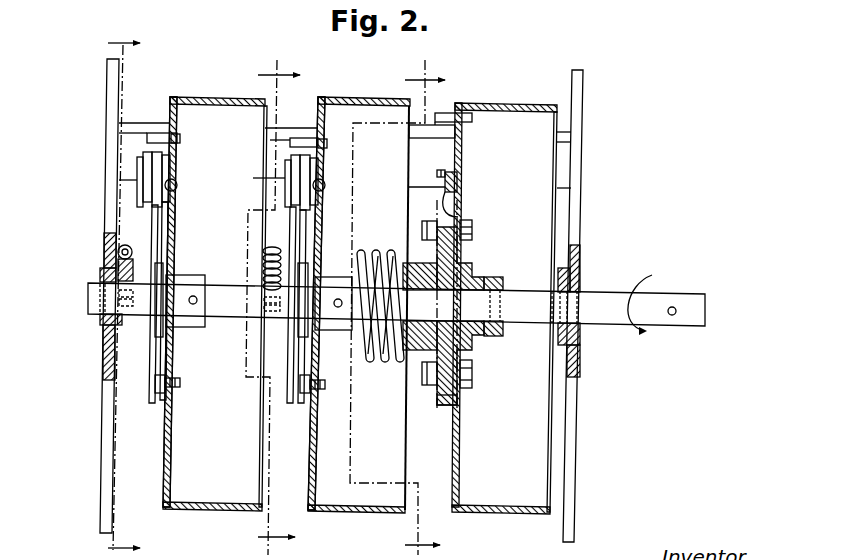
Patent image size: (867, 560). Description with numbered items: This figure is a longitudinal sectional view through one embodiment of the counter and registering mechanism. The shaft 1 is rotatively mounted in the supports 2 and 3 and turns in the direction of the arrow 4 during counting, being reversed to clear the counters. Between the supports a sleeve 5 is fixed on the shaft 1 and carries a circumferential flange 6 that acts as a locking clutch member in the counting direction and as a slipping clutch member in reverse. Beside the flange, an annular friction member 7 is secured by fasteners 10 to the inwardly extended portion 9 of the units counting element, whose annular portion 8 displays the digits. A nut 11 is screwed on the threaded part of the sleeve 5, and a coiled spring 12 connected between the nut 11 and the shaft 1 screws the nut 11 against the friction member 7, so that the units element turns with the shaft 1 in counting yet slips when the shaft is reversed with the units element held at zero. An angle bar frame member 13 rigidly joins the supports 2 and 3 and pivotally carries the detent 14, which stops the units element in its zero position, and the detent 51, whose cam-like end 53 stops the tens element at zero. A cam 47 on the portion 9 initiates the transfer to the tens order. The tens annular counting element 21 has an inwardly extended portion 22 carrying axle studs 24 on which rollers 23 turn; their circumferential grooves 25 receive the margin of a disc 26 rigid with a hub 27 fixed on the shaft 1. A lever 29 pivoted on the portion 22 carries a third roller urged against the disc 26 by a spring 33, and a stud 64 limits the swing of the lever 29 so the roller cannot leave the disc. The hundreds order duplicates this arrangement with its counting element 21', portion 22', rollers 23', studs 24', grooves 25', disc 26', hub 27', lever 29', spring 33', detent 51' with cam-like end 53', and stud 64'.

The shaft 1 is at (694, 326).
The support 2 is at (577, 185).
The support 3 is at (97, 186).
The arrow 4 is at (444, 307).
The sleeve 5 is at (507, 274).
The circumferential flange 6 is at (470, 266).
The annular friction member 7 is at (452, 398).
The annular portion of units counting element 8 is at (518, 104).
The inwardly extended portion 9 is at (462, 205).
The fasteners 10 is at (473, 229).
The nut 11 is at (405, 352).
The coiled spring 12 is at (390, 258).
The angle bar frame member 13 is at (130, 147).
The detent 14 is at (450, 113).
The tens annular counting element 21 is at (359, 291).
The hundreds annular counting element 21' is at (215, 290).
The inwardly extended portion 22 is at (329, 303).
The inwardly extended portion 22' is at (154, 302).
The rollers 23 is at (327, 185).
The rollers 23' is at (188, 185).
The axle studs 24 is at (260, 178).
The axle studs 24' is at (129, 201).
The circumferential groove 25 is at (280, 182).
The circumferential groove 25' is at (174, 179).
The disc 26 is at (292, 305).
The disc 26' is at (144, 302).
The hub 27 is at (333, 290).
The hub 27' is at (185, 317).
The lever 29 is at (318, 318).
The lever 29' is at (178, 323).
The spring 33 is at (251, 268).
The spring 33' is at (133, 256).
The cam 47 is at (442, 171).
The detent 51 is at (291, 125).
The detent 51' is at (148, 120).
The cam-like end 53 is at (328, 152).
The cam-like end 53' is at (193, 133).
The stud 64 is at (306, 402).
The stud 64' is at (156, 402).